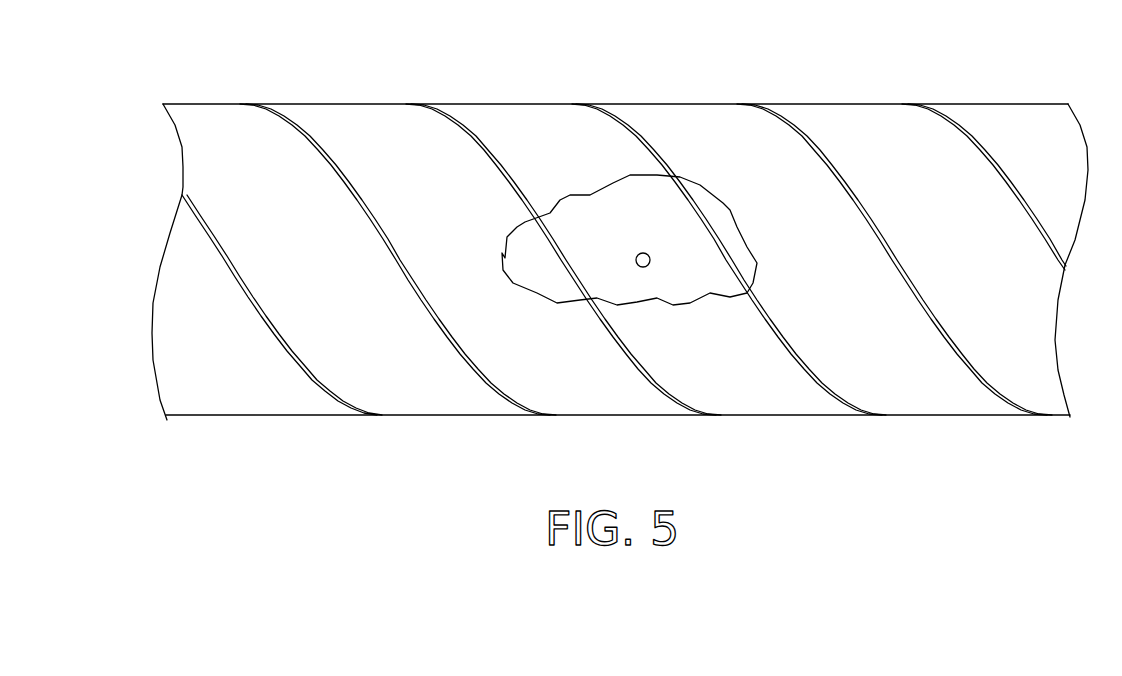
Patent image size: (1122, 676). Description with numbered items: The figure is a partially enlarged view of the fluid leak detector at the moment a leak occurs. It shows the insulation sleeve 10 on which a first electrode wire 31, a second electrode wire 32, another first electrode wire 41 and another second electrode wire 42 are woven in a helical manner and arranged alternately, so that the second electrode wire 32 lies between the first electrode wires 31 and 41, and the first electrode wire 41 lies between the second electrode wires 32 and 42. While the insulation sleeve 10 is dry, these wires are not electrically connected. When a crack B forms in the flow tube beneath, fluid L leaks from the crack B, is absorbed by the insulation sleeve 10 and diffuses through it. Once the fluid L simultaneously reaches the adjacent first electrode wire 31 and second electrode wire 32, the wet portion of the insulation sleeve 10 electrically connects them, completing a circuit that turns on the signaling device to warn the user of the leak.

The insulation sleeve 10 is at (678, 132).
The first electrode wire 31 is at (800, 362).
The second electrode wire 32 is at (638, 362).
The first electrode wire 41 is at (473, 362).
The second electrode wire 42 is at (298, 363).
The crack B is at (643, 250).
The fluid L is at (703, 185).